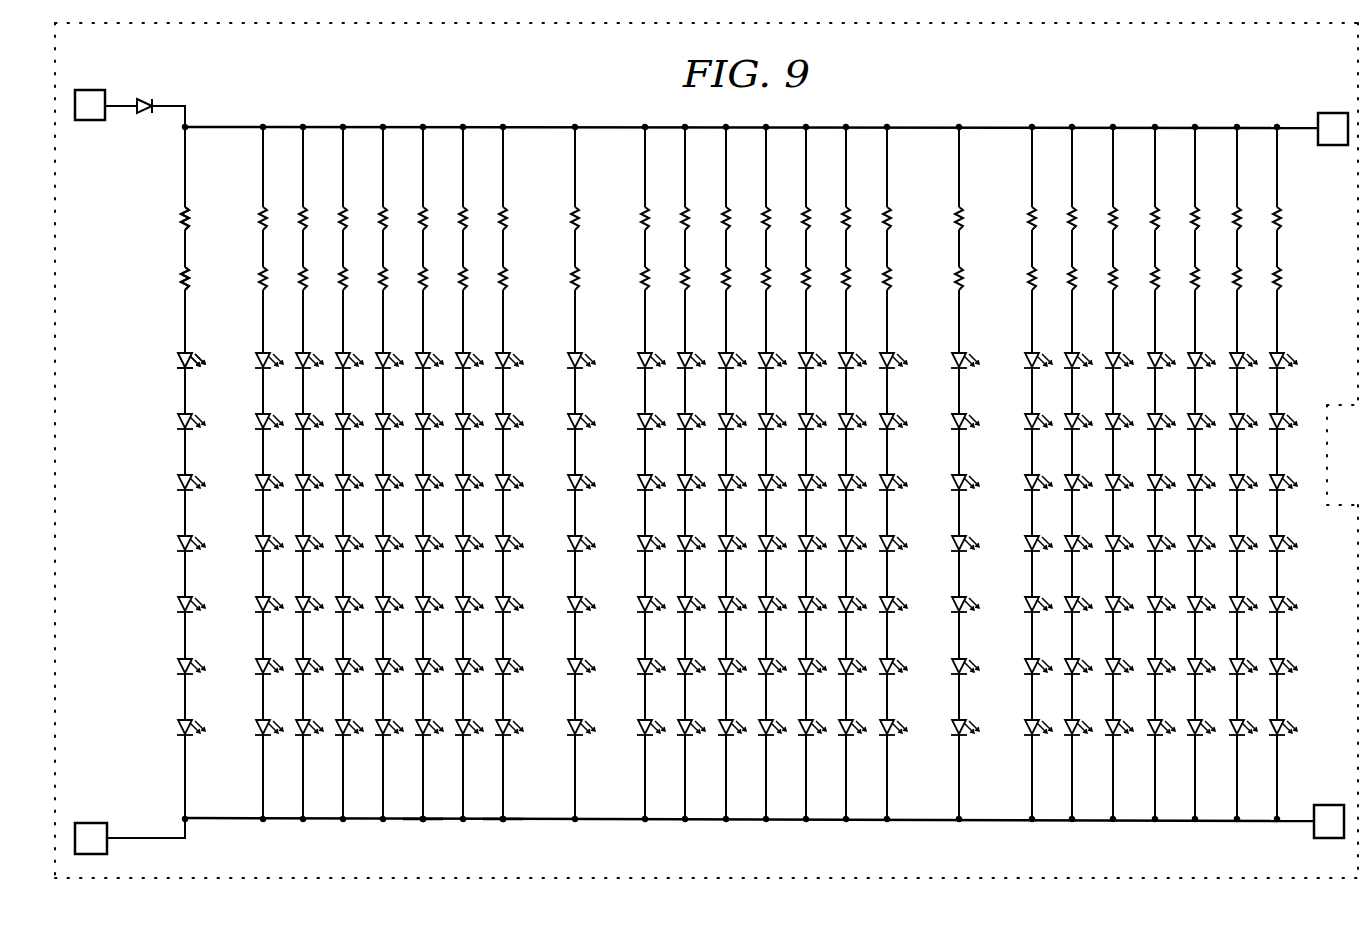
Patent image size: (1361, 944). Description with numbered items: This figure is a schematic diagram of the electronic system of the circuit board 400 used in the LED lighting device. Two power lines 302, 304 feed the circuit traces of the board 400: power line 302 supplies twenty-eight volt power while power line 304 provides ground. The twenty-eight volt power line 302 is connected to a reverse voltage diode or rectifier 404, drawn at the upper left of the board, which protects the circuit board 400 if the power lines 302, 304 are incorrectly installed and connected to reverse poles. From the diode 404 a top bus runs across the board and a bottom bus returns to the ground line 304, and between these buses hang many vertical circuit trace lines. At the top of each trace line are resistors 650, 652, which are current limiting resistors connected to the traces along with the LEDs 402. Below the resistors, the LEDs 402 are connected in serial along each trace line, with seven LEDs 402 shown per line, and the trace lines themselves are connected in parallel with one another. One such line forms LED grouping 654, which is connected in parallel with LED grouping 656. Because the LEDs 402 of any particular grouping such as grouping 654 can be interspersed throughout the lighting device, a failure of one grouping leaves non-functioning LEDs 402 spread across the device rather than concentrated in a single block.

The circuit board 400 is at (1058, 102).
The power line 302 is at (92, 89).
The power line 304 is at (92, 822).
The reverse voltage diode 404 is at (148, 98).
The resistor 650 is at (180, 215).
The resistor 652 is at (180, 278).
The LED 402 is at (177, 363).
The LED grouping 654 is at (421, 823).
The LED grouping 656 is at (505, 823).